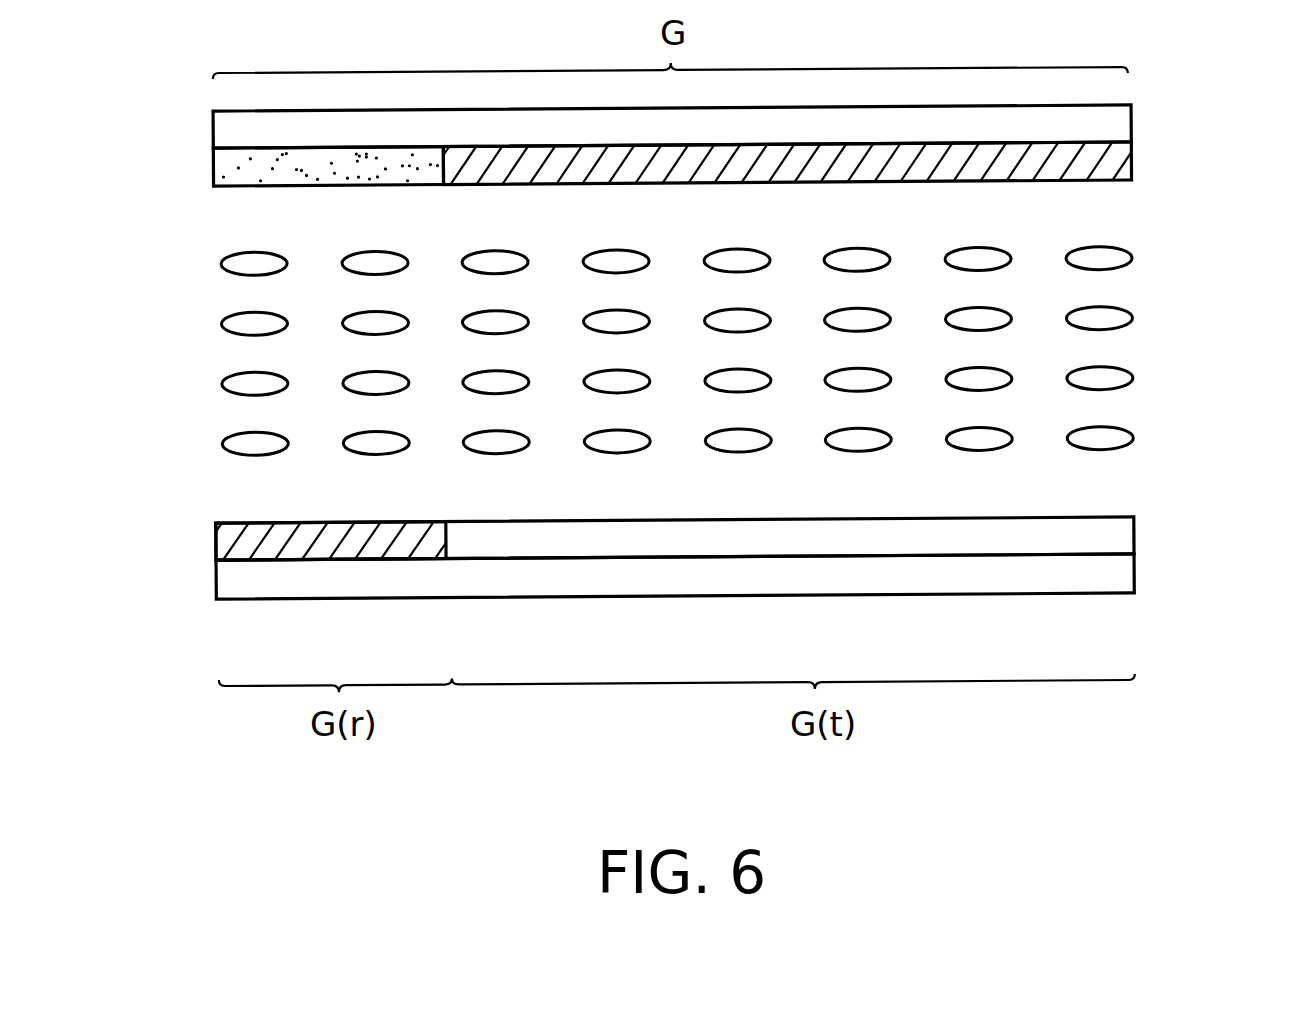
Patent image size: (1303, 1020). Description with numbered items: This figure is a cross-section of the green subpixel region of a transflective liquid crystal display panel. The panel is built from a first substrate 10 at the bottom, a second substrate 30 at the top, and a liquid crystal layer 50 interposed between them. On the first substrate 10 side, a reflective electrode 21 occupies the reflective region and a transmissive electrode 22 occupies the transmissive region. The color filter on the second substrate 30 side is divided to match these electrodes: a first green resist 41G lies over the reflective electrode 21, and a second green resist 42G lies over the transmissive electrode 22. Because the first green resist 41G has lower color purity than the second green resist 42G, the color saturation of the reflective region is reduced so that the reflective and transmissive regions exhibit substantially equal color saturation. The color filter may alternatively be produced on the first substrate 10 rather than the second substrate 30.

The first substrate 10 is at (1113, 572).
The reflective electrode 21 is at (235, 538).
The transmissive electrode 22 is at (1113, 535).
The second substrate 30 is at (1110, 125).
The first green resist 41G is at (237, 170).
The second green resist 42G is at (1110, 165).
The liquid crystal layer 50 is at (1110, 352).